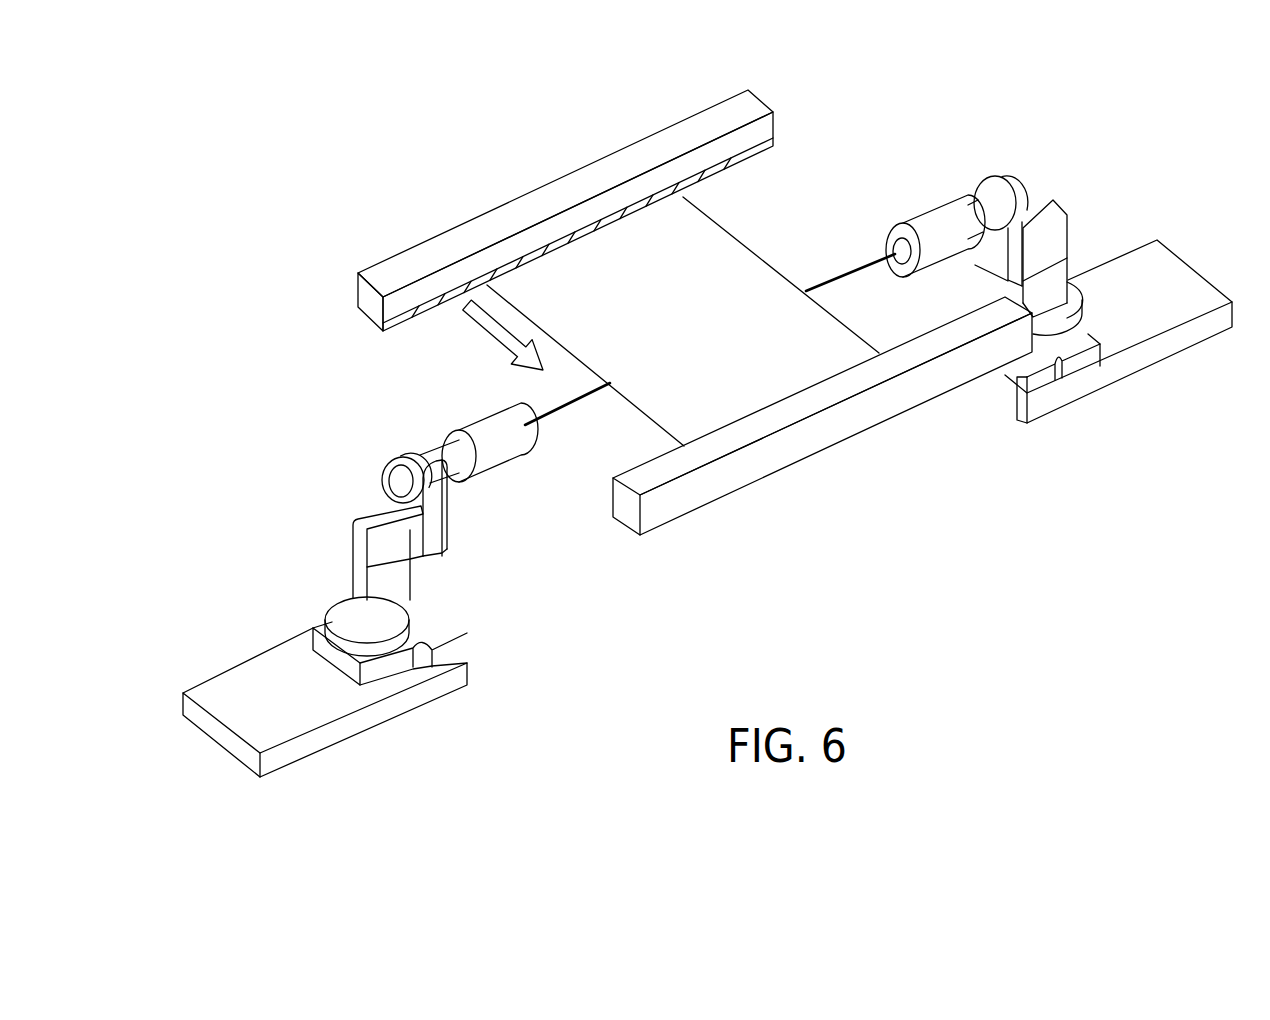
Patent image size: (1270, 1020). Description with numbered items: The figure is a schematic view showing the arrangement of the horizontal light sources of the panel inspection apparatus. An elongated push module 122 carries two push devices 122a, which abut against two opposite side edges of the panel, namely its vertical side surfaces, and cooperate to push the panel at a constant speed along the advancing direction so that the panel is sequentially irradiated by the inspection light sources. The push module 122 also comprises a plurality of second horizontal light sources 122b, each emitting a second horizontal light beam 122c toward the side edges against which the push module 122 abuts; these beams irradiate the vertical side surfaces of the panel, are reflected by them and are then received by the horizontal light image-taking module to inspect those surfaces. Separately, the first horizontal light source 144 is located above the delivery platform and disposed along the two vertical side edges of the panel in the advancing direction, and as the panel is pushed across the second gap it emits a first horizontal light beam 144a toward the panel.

The push module 122 is at (587, 191).
The push device 122a is at (438, 250).
The second horizontal light source 122b is at (708, 181).
The second horizontal light beam 122c is at (505, 340).
The first horizontal light source 144 is at (490, 457).
The first horizontal light beam 144a is at (602, 393).